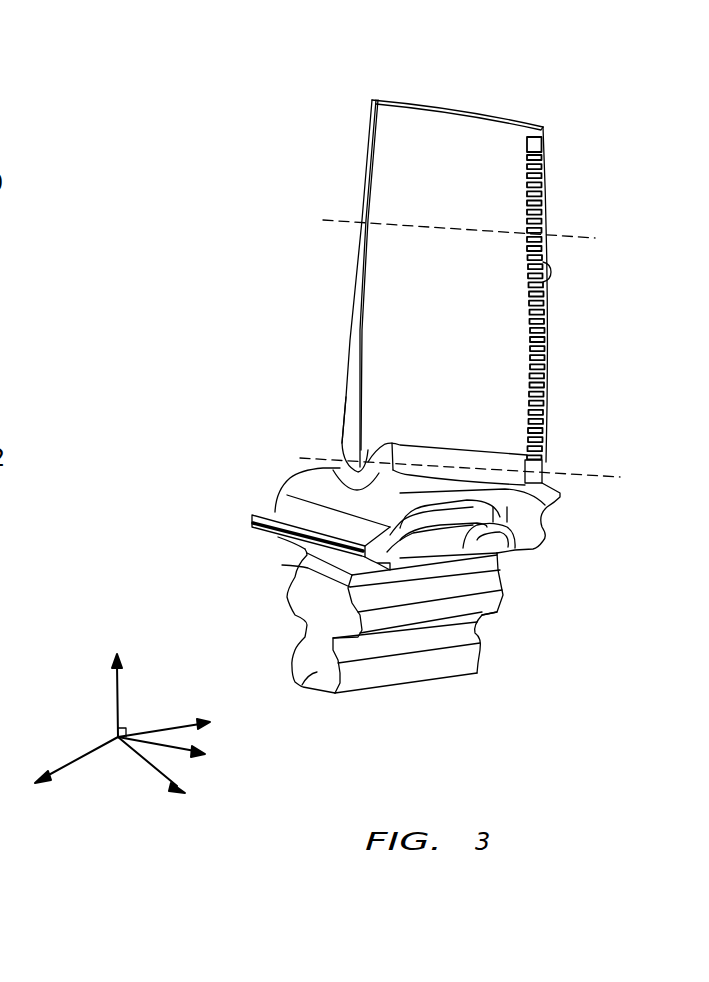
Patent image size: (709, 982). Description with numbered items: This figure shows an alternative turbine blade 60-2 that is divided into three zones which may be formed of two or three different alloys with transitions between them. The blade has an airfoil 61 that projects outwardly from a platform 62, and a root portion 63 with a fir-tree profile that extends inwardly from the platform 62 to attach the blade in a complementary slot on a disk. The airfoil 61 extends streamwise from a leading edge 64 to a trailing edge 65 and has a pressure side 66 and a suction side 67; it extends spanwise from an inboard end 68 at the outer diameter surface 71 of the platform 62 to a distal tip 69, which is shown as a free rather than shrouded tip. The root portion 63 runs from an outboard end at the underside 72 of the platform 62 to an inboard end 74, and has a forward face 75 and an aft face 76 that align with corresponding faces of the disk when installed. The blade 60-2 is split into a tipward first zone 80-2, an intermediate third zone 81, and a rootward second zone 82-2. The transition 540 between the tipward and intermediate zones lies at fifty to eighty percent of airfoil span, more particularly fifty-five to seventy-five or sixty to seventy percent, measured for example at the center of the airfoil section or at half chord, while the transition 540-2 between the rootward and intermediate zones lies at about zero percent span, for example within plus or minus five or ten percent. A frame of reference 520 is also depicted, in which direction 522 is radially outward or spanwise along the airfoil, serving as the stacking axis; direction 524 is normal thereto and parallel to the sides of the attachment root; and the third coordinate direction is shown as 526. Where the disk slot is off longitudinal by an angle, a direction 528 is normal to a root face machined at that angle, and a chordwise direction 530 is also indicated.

The blade 60-2 is at (451, 407).
The airfoil 61 is at (370, 280).
The platform 62 is at (303, 486).
The root portion 63 is at (318, 606).
The leading edge 64 is at (372, 143).
The trailing edge 65 is at (523, 277).
The pressure side 66 is at (452, 152).
The suction side 67 is at (345, 422).
The inboard end 68 is at (467, 462).
The tip 69 is at (402, 100).
The outer diameter surface 71 is at (318, 480).
The underside 72 is at (305, 563).
The inboard end 74 is at (315, 690).
The forward face 75 is at (300, 697).
The aft face 76 is at (487, 645).
The Zone 1 80-2 is at (563, 127).
The Zone 3 81 is at (563, 236).
The Zone 2 82-2 is at (563, 474).
The Zone 1/3 transition 540 is at (595, 238).
The Zone 2/3 transition 540-2 is at (620, 477).
The frame of reference 520 is at (138, 740).
The radially-outward direction 522 is at (117, 690).
The direction normal to spanwise 524 is at (163, 733).
The third coordinate direction 526 is at (148, 765).
The direction normal to machined face 528 is at (80, 763).
The chordwise direction 530 is at (180, 755).